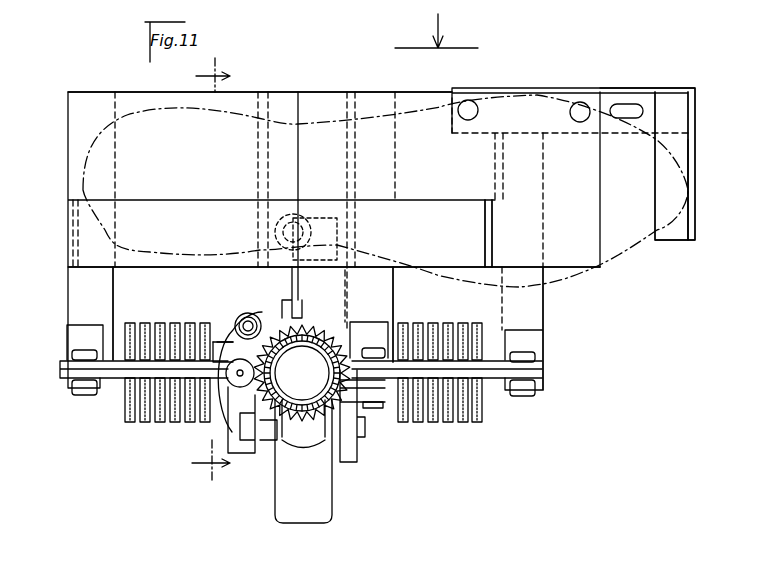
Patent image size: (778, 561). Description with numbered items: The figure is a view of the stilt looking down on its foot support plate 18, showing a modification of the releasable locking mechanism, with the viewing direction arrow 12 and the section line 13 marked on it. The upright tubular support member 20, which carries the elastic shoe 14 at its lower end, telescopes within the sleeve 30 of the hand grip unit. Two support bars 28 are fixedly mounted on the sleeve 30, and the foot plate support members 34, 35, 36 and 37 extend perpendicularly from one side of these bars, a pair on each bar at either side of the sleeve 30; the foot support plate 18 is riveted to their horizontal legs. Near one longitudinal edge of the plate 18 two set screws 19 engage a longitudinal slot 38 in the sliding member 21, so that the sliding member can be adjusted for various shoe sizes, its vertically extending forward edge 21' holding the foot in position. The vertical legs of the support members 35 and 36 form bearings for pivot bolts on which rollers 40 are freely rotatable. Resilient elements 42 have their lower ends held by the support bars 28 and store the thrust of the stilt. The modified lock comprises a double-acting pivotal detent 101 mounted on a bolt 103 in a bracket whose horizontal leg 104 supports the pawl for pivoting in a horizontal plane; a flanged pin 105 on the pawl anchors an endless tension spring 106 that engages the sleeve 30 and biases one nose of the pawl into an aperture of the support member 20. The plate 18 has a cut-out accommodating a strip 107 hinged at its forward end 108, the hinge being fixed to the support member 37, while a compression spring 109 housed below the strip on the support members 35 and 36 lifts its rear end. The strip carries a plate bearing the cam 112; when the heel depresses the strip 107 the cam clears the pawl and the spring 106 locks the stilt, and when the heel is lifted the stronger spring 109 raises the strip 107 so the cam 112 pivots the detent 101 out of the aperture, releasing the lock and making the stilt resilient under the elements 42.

The arrow 12 is at (436, 30).
The section line 13 is at (203, 274).
The elastic shoe 14 is at (325, 508).
The foot support plate 18 is at (78, 126).
The set screws 19 is at (580, 102).
The tubular support member 20 is at (318, 395).
The sliding member 21 is at (647, 145).
The forward edge 21' is at (712, 190).
The support bars 28 is at (545, 371).
The sleeve 30 is at (302, 373).
The foot plate support member 34 is at (82, 299).
The foot plate support member 35 is at (218, 277).
The foot plate support member 36 is at (387, 292).
The foot plate support member 37 is at (543, 306).
The longitudinal slot 38 is at (616, 104).
The rollers 40 is at (318, 300).
The resilient elements 42 is at (150, 425).
The pivotal detent 101 is at (243, 313).
The bolt 103 is at (238, 316).
The horizontal leg 104 is at (217, 318).
The pin 105 is at (233, 392).
The tension spring 106 is at (345, 325).
The strip 107 is at (85, 258).
The forward end 108 is at (487, 243).
The compression spring 109 is at (300, 210).
The cam 112 is at (300, 280).